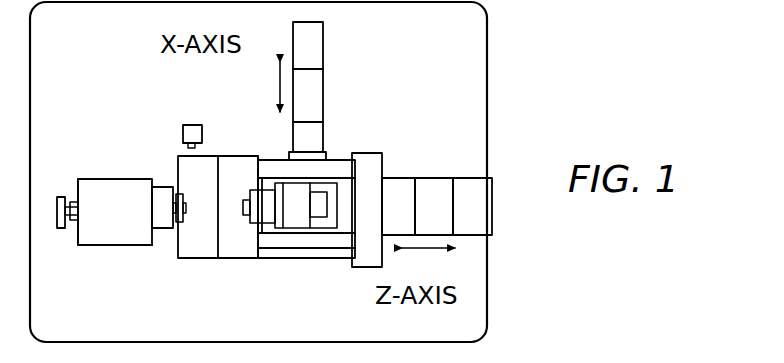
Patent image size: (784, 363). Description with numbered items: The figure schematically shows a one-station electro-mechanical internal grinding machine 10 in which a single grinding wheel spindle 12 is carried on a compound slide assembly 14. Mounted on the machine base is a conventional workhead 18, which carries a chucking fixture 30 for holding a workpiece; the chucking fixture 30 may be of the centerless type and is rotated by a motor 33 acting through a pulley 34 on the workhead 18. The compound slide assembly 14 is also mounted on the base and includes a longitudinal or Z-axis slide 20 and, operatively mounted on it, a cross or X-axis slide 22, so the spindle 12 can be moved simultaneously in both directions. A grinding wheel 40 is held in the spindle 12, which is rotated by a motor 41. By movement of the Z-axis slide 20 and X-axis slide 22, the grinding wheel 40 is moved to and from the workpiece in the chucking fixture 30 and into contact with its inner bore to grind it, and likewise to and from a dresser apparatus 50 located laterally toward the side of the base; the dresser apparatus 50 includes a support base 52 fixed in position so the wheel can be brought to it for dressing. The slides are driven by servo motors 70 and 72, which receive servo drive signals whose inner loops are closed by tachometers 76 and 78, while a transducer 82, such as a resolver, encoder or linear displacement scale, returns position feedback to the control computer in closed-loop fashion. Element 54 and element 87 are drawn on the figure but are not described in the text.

The internal grinding machine 10 is at (490, 36).
The grinding wheel spindle 12 is at (252, 190).
The compound slide assembly 14 is at (266, 255).
The workhead 18 is at (130, 250).
The Z-axis slide 20 is at (244, 262).
The X-axis slide 22 is at (342, 196).
The chucking fixture 30 is at (160, 193).
The motor 33 is at (89, 238).
The pulley 34 is at (65, 177).
The grinding wheel 40 is at (246, 208).
The motor 41 is at (304, 220).
The dresser apparatus 50 is at (209, 133).
The support base 52 is at (190, 147).
The sensor cable 54 is at (190, 147).
The servo motor 70 is at (393, 188).
The servo motor 72 is at (323, 128).
The tachometer 76 is at (430, 188).
The tachometer 78 is at (323, 85).
The transducer 82 is at (323, 40).
The end block 87 is at (468, 188).